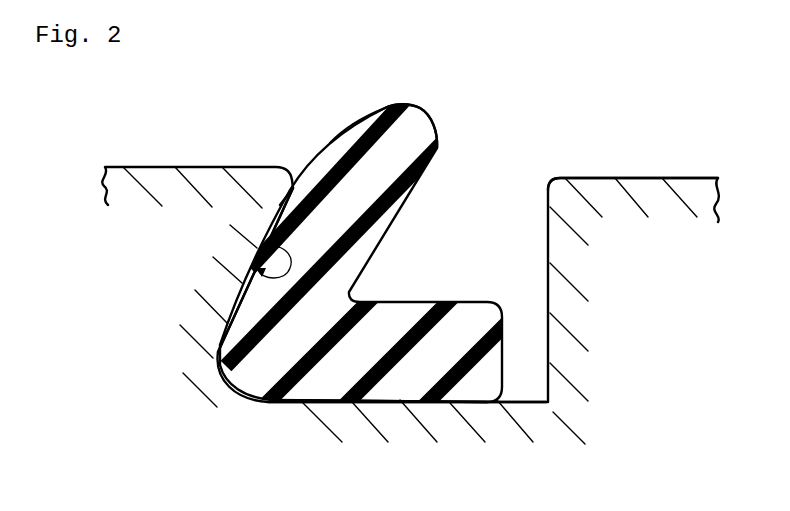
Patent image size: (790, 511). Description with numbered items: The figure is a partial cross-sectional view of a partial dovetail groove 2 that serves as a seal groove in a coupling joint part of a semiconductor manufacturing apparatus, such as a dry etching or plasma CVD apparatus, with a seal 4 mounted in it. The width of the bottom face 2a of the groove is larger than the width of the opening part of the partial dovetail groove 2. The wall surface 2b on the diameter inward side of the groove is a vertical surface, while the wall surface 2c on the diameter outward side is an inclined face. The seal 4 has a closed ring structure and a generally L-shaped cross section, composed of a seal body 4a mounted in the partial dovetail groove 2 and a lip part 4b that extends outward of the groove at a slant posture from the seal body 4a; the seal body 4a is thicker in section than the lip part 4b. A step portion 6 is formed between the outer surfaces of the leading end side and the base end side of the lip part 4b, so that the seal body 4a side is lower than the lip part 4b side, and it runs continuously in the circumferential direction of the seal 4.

The partial dovetail groove 2 is at (232, 210).
The bottom face 2a is at (545, 402).
The wall surface 2b is at (548, 243).
The wall surface 2c is at (232, 318).
The seal 4 is at (434, 203).
The seal body 4a is at (390, 380).
The lip part 4b is at (362, 163).
The step portion 6 is at (290, 185).